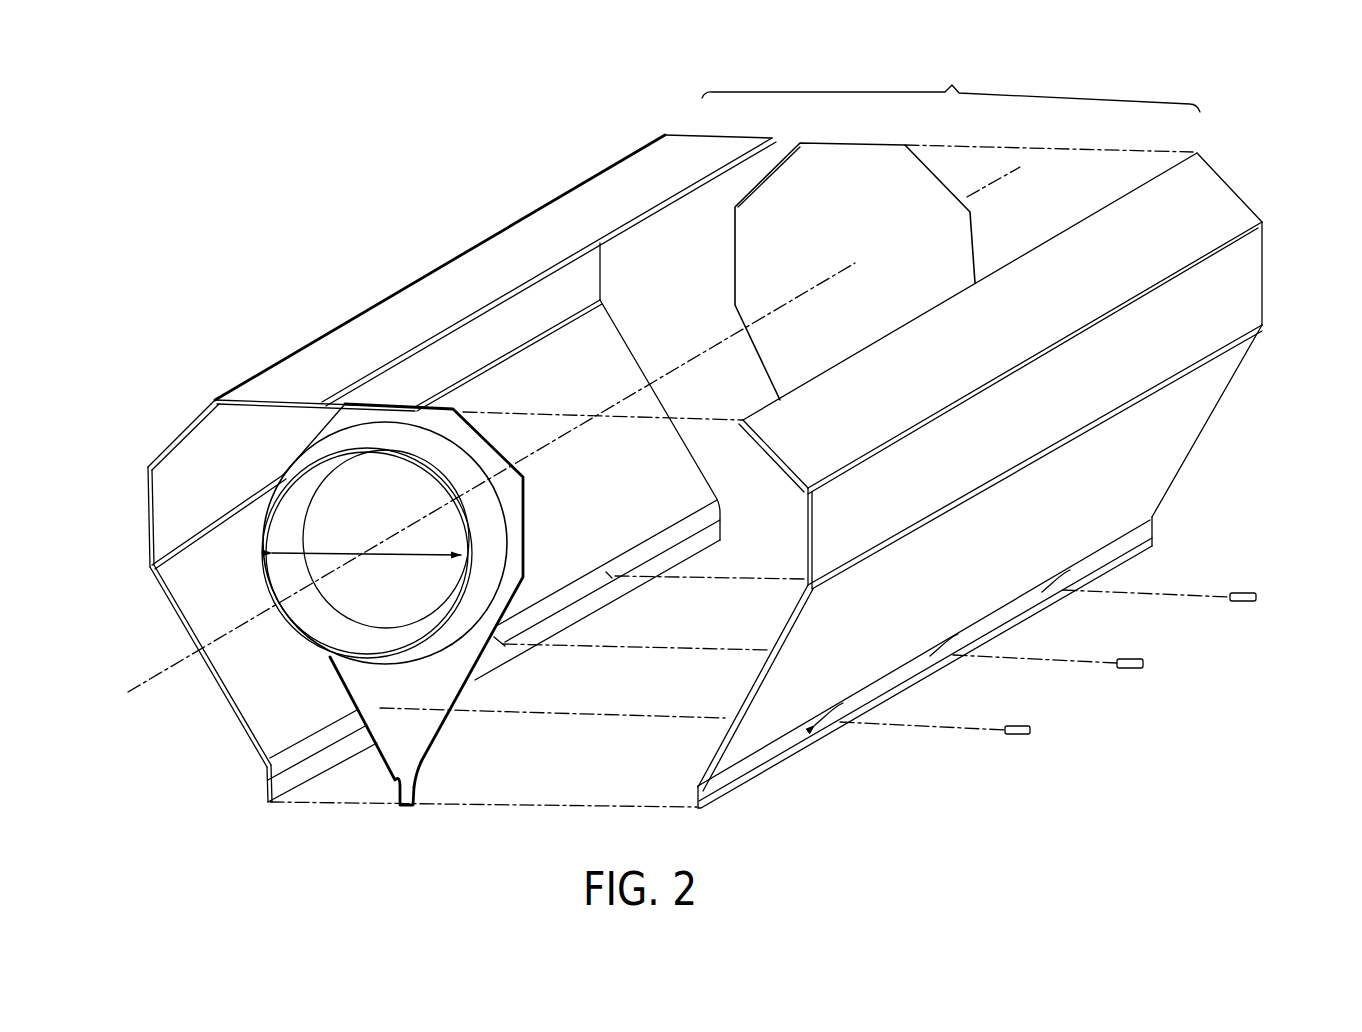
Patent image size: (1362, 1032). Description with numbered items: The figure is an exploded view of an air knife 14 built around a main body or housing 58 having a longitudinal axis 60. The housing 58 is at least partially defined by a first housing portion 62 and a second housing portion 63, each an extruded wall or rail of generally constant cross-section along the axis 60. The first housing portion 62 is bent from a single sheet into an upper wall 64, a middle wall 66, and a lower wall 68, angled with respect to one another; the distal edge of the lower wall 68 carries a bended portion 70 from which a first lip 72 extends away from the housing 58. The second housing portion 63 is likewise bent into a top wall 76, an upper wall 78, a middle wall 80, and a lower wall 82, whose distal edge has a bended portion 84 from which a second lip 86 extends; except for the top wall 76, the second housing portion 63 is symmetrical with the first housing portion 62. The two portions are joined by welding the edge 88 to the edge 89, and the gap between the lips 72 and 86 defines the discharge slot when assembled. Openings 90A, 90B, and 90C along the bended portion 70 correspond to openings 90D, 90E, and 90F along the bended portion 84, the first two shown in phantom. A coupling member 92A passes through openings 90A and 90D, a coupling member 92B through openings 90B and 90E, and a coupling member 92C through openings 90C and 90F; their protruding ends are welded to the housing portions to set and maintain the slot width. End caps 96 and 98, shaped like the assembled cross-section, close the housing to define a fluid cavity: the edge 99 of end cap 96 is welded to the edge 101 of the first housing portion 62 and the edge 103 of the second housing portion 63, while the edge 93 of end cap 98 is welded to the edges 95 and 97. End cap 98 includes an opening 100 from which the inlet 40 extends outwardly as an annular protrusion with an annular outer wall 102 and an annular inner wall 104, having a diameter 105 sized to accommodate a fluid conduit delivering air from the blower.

The air knife 14 is at (385, 207).
The housing 58 is at (951, 86).
The second housing portion 63 is at (604, 164).
The edge of the second housing portion 103 is at (722, 133).
The upper wall 64 is at (1212, 192).
The first housing portion 62 is at (1252, 180).
The edge of end cap 96 99 is at (746, 185).
The edge of the first housing portion 88 is at (640, 222).
The end cap 96 is at (750, 252).
The middle wall 66 is at (1248, 288).
The top wall 76 is at (398, 320).
The edge of the second housing portion 89 is at (806, 378).
The upper wall 78 is at (182, 432).
The edge of the first housing portion 101 is at (1232, 392).
The annular outer wall 102 is at (420, 445).
The outside diameter 105 is at (330, 553).
The edge of end cap 98 93 is at (530, 527).
The middle wall 80 is at (170, 495).
The edge of the second housing portion 97 is at (170, 580).
The inlet 40 is at (262, 538).
The opening 100 is at (372, 620).
The annular inner wall 104 is at (385, 640).
The lower wall 68 is at (1182, 443).
The lower wall 82 is at (192, 595).
The opening 90A is at (820, 720).
The opening 90B is at (934, 653).
The opening 90C is at (1046, 589).
The opening 90D is at (382, 706).
The opening 90E is at (500, 643).
The opening 90F is at (612, 578).
The edge of the first housing portion 95 is at (748, 690).
The bended portion 70 is at (1110, 548).
The longitudinal axis 60 is at (157, 675).
The coupling member 92A is at (1018, 735).
The coupling member 92B is at (1130, 668).
The coupling member 92C is at (1243, 601).
The bended portion 84 is at (280, 767).
The second lip 86 is at (313, 767).
The end cap 98 is at (410, 750).
The first lip 72 is at (778, 757).